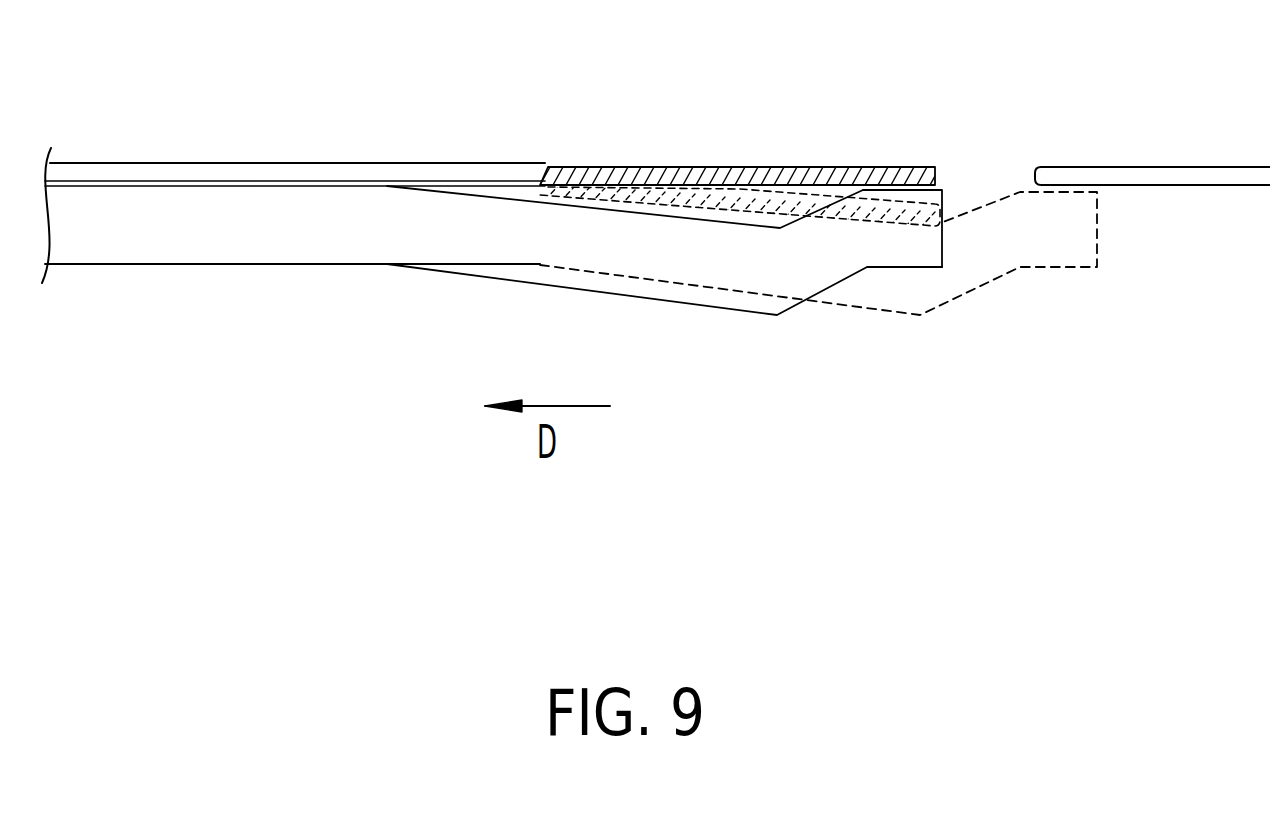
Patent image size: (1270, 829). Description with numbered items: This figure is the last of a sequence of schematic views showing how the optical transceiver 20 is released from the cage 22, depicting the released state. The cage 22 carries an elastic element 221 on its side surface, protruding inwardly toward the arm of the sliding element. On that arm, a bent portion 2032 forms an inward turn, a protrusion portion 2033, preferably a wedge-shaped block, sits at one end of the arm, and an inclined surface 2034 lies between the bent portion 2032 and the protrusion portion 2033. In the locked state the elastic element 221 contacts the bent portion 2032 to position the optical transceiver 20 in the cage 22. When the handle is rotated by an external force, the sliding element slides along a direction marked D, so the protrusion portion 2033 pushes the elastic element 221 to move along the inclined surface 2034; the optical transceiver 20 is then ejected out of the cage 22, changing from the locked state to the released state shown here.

The optical transceiver 20 is at (218, 240).
The cage 22 is at (297, 176).
The elastic element 221 is at (757, 167).
The bent portion 2032 is at (633, 215).
The protrusion portion 2033 is at (918, 193).
The inclined surface 2034 is at (805, 212).